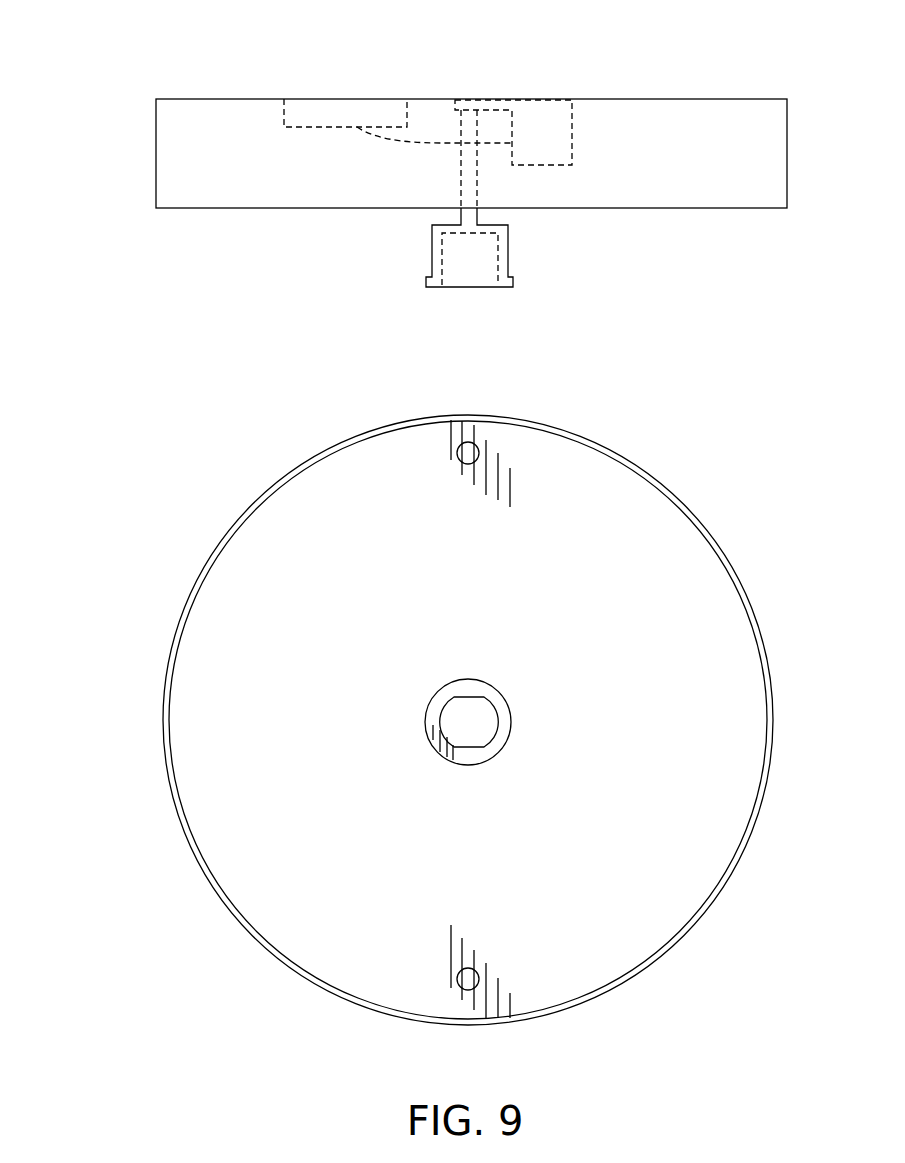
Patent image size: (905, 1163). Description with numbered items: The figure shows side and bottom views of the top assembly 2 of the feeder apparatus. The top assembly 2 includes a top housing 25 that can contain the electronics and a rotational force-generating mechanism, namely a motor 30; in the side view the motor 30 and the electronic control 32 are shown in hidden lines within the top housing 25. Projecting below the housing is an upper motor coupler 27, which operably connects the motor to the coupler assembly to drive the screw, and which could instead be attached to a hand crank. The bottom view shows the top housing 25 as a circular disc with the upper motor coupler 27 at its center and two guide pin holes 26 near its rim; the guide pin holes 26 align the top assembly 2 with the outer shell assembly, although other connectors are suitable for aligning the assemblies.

The top assembly 2 is at (130, 119).
The top housing 25 is at (588, 99).
The guide pin holes 26 is at (458, 459).
The upper motor coupler 27 is at (502, 286).
The motor 30 is at (555, 165).
The electronic control 32 is at (405, 113).